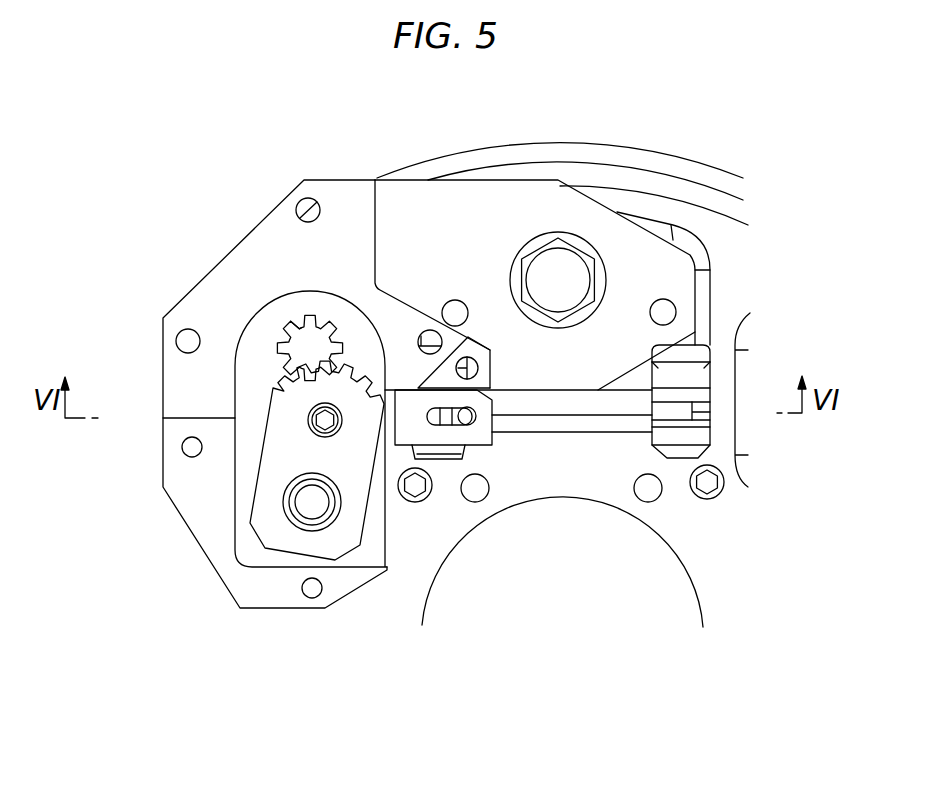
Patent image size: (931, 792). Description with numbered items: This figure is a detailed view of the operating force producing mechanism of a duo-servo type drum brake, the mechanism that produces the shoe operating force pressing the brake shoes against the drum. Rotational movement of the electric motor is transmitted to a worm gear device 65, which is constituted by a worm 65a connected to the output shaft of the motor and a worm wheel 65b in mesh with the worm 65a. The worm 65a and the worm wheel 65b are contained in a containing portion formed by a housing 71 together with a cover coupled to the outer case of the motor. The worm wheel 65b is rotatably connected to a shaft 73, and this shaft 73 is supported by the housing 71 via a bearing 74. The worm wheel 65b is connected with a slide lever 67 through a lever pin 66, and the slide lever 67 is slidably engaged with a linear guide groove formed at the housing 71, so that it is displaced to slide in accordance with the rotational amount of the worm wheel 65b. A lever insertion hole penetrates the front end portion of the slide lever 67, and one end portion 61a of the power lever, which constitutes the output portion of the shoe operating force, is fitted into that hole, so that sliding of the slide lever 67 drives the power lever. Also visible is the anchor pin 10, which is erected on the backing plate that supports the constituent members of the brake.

The anchor pin 10 is at (570, 270).
The end portion of the power lever 61a is at (462, 413).
The worm gear device 65 is at (318, 313).
The worm 65a is at (287, 327).
The worm wheel 65b is at (283, 397).
The lever pin 66 is at (308, 427).
The slide lever 67 is at (407, 430).
The housing 71 is at (195, 283).
The shaft 73 is at (308, 503).
The bearing 74 is at (285, 512).